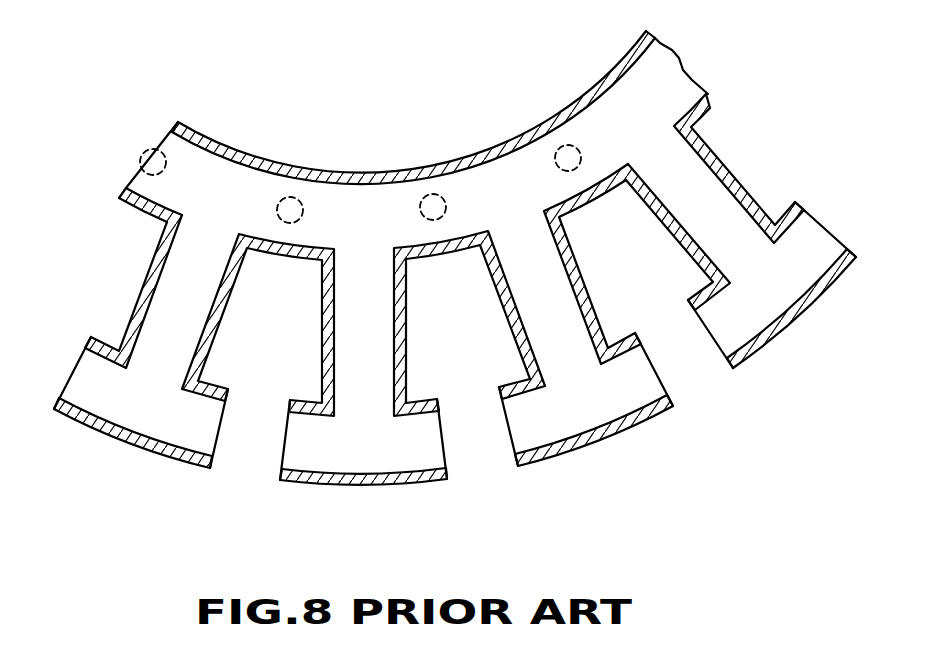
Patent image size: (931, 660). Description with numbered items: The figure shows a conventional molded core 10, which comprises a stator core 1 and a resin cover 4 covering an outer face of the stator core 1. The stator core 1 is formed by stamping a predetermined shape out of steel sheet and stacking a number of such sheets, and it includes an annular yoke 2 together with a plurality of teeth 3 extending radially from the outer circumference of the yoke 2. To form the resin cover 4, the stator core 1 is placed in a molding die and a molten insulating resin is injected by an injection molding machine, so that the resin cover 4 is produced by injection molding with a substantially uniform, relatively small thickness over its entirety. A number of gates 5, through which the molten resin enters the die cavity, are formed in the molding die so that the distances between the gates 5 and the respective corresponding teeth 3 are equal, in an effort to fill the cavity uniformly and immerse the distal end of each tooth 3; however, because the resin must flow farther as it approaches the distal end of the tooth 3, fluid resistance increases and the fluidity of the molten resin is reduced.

The stator core 1 is at (403, 177).
The annular yoke 2 is at (220, 173).
The teeth 3 is at (137, 421).
The resin cover 4 is at (143, 283).
The gates 5 is at (290, 197).
The molded core 10 is at (364, 148).